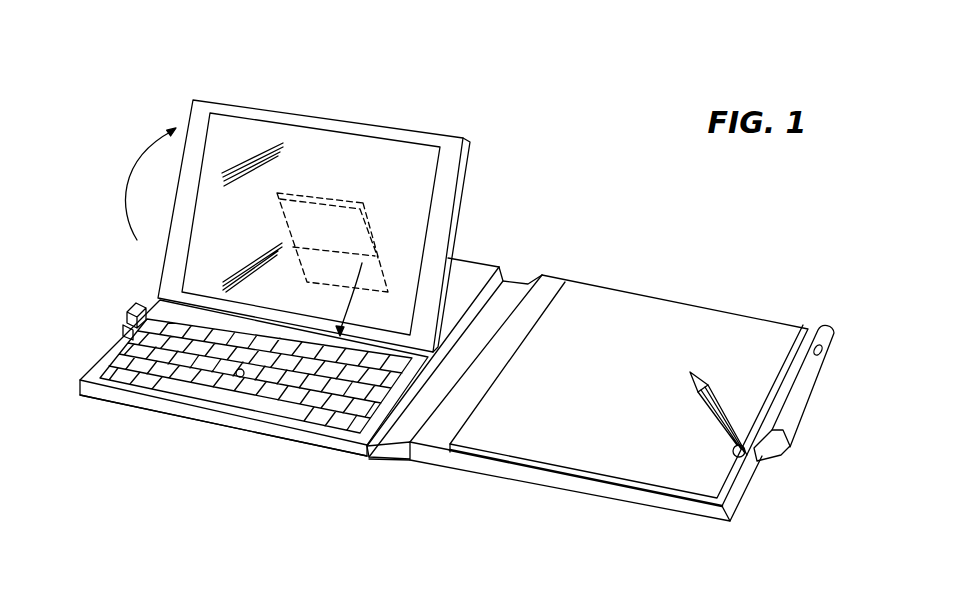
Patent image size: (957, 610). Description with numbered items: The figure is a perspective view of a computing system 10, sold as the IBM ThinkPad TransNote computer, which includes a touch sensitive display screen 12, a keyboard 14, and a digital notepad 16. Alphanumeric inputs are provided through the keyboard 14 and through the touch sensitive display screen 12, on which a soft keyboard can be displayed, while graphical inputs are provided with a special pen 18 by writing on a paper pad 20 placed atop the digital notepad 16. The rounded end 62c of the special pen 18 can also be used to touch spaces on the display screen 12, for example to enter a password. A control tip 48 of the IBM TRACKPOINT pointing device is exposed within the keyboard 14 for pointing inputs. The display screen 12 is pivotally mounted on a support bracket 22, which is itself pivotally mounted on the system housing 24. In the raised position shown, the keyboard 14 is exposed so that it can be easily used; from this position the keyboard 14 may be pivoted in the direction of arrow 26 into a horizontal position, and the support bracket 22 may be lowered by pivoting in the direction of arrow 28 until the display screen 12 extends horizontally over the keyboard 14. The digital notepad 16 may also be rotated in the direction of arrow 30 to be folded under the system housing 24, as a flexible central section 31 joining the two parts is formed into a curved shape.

The computing system 10 is at (285, 462).
The touch sensitive display screen 12 is at (272, 125).
The keyboard 14 is at (173, 387).
The digital notepad 16 is at (560, 488).
The special pen 18 is at (717, 393).
The paper pad 20 is at (557, 297).
The support bracket 22 is at (378, 213).
The system housing 24 is at (505, 268).
The arrow 26 is at (130, 178).
The arrow 28 is at (327, 299).
The arrow 30 is at (452, 503).
The flexible central section 31 is at (380, 452).
The control tip 48 is at (243, 380).
The rounded end 62c is at (757, 461).